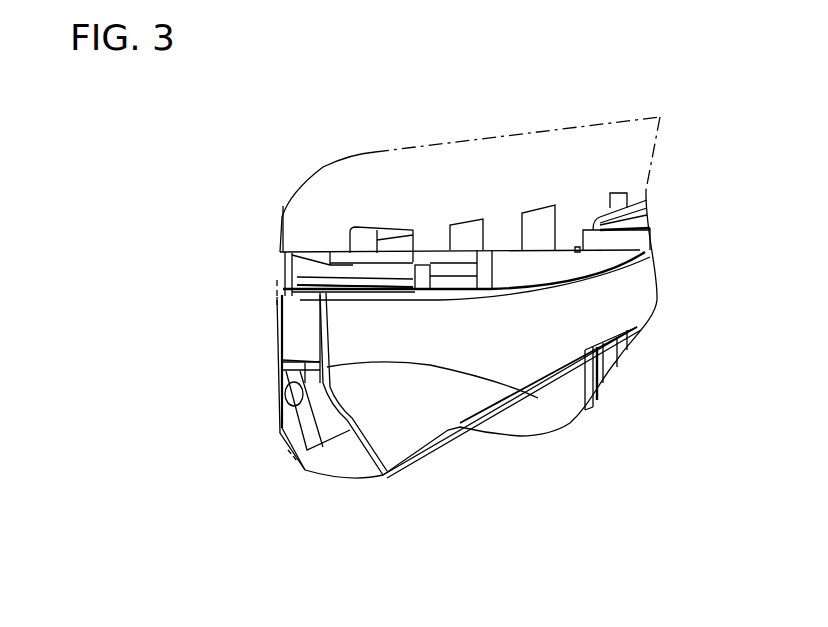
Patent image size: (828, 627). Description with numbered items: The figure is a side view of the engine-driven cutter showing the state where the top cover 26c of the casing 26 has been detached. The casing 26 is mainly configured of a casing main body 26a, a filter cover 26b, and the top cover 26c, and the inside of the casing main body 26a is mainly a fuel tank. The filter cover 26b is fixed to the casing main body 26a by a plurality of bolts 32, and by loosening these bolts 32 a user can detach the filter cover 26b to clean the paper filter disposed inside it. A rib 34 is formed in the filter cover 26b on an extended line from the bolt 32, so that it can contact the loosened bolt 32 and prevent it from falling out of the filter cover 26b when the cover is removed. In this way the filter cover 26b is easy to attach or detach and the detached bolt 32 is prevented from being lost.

The casing 26 is at (158, 273).
The casing main body 26a is at (283, 208).
The filter cover 26b is at (348, 332).
The top cover 26c is at (327, 367).
The bolt 32 is at (418, 263).
The rib 34 is at (359, 290).